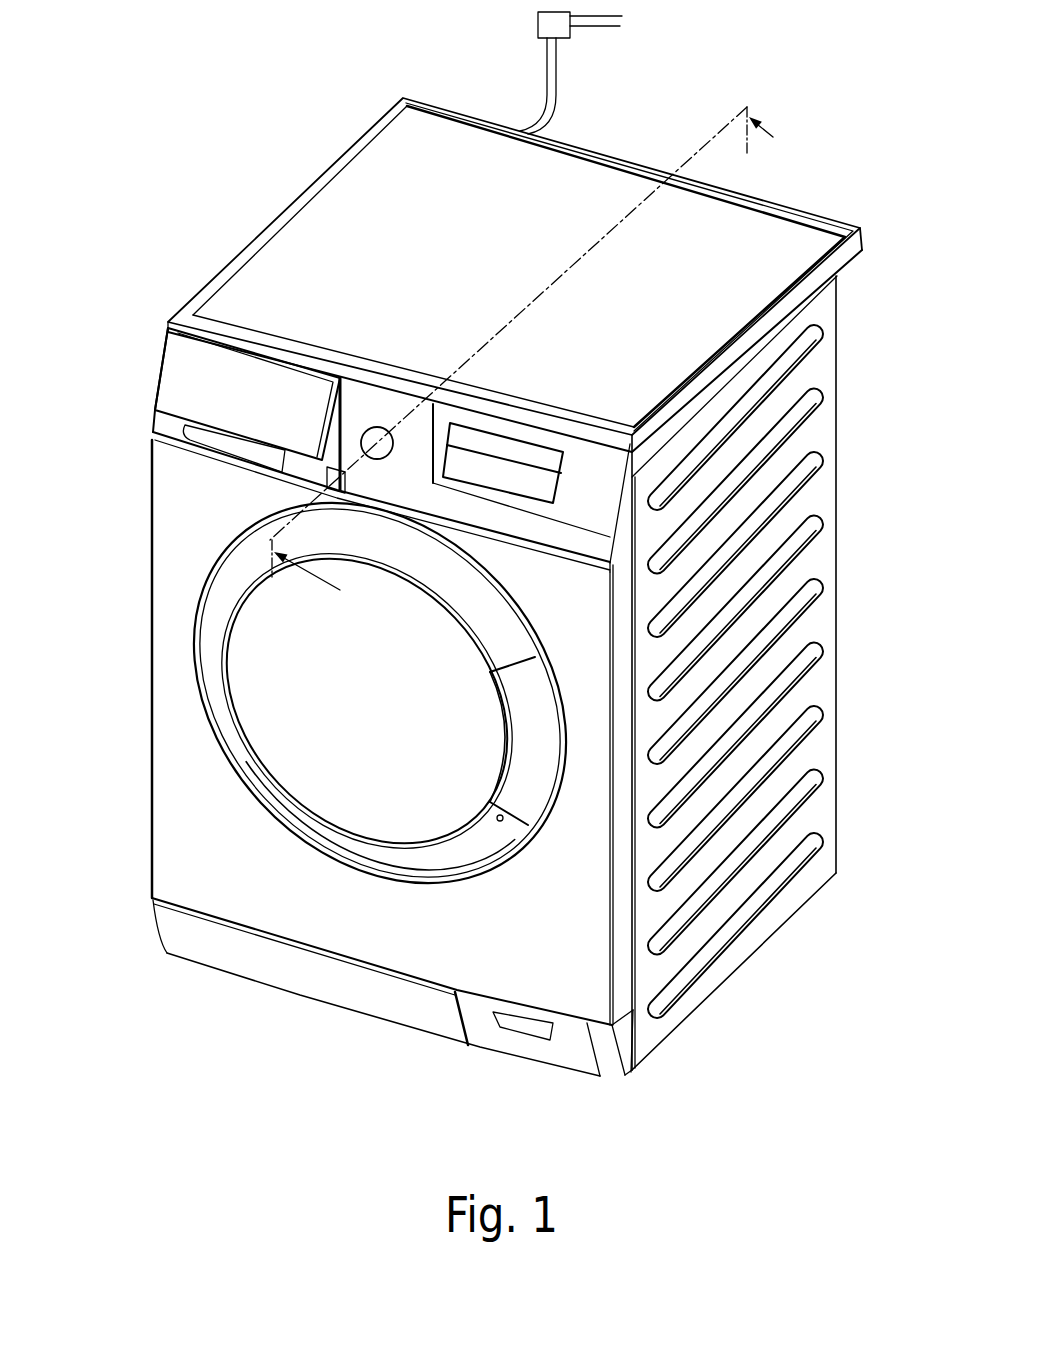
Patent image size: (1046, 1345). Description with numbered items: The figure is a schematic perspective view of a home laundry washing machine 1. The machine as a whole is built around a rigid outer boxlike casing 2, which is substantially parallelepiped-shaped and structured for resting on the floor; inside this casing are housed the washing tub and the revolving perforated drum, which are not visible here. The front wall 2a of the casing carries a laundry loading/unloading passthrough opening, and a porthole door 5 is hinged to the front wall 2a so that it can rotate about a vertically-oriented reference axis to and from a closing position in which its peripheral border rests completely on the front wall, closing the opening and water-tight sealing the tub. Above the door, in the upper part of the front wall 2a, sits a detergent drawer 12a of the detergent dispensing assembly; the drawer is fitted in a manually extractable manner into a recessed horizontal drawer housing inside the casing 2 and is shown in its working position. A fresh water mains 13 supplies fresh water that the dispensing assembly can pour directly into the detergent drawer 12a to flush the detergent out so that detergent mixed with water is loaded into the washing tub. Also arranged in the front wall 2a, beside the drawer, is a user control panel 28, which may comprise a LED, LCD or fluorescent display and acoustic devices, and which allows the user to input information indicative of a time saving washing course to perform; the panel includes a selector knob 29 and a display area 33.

The home laundry washing machine 1 is at (213, 991).
The rigid outer boxlike casing 2 is at (163, 935).
The front wall 2a is at (195, 850).
The porthole door 5 is at (360, 738).
The detergent drawer 12a is at (186, 388).
The fresh water mains 13 is at (570, 40).
The user control panel 28 is at (332, 454).
The course selection knob 29 is at (362, 426).
The display unit 33 is at (518, 500).